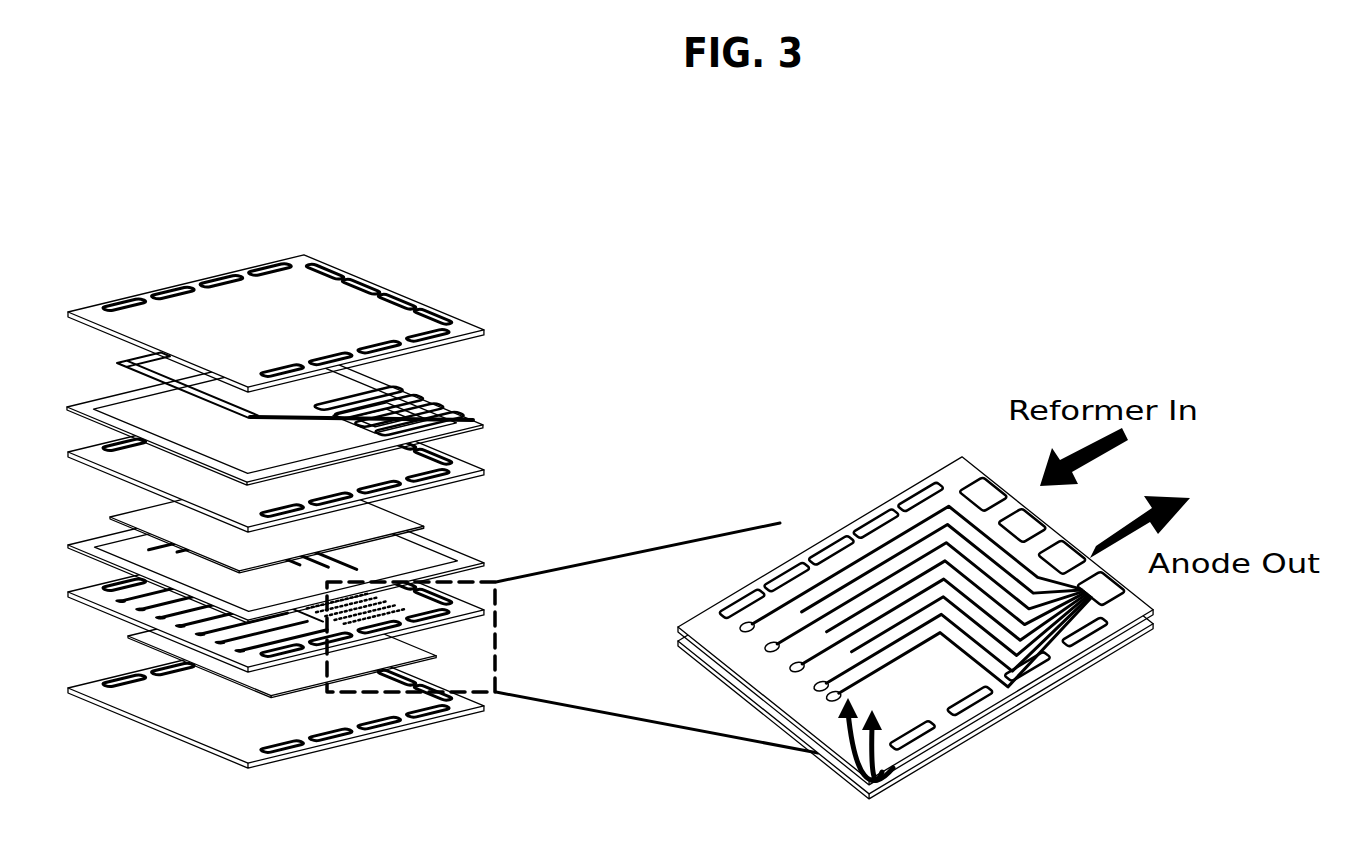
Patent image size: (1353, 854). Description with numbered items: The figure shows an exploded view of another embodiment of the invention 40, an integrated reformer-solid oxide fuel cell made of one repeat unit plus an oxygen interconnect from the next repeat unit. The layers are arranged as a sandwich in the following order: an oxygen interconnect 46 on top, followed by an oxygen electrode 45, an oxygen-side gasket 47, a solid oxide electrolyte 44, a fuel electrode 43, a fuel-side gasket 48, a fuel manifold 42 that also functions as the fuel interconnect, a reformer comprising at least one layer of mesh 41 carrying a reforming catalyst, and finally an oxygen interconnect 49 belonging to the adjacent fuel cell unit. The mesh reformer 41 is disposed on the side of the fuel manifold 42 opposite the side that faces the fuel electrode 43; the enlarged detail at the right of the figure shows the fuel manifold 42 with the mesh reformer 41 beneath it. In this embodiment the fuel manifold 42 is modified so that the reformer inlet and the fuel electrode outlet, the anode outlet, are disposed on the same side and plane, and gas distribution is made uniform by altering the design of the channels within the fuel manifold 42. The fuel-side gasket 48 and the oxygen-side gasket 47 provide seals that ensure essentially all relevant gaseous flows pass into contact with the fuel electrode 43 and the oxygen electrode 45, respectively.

The integrated reformer-solid oxide fuel cell 40 is at (394, 211).
The mesh reformer 41 is at (1033, 700).
The fuel manifold 42 is at (888, 506).
The fuel electrode 43 is at (420, 517).
The solid oxide electrolyte 44 is at (466, 463).
The oxygen electrode 45 is at (433, 372).
The oxygen interconnect 46 is at (422, 291).
The oxygen-side gasket 47 is at (468, 413).
The fuel-side gasket 48 is at (490, 555).
The oxygen interconnect 49 is at (372, 743).